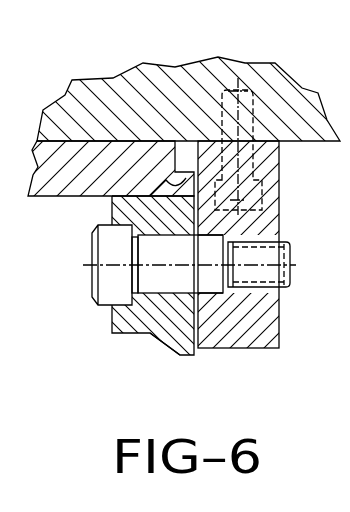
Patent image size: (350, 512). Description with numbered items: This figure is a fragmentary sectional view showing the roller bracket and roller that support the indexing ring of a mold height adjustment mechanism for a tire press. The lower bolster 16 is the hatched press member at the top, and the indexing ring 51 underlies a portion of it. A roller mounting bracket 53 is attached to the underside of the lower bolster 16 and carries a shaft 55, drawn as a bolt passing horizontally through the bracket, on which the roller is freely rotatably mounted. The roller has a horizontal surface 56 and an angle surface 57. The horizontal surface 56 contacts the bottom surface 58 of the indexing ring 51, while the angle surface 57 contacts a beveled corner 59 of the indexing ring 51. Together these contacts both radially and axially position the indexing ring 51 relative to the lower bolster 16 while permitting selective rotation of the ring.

The lower bolster 16 is at (293, 103).
The indexing ring 51 is at (63, 162).
The beveled corner 59 is at (180, 172).
The bottom surface 58 is at (53, 197).
The roller mounting bracket 53 is at (245, 328).
The horizontal surface 56 is at (128, 336).
The angle surface 57 is at (160, 341).
The shaft 55 is at (212, 247).